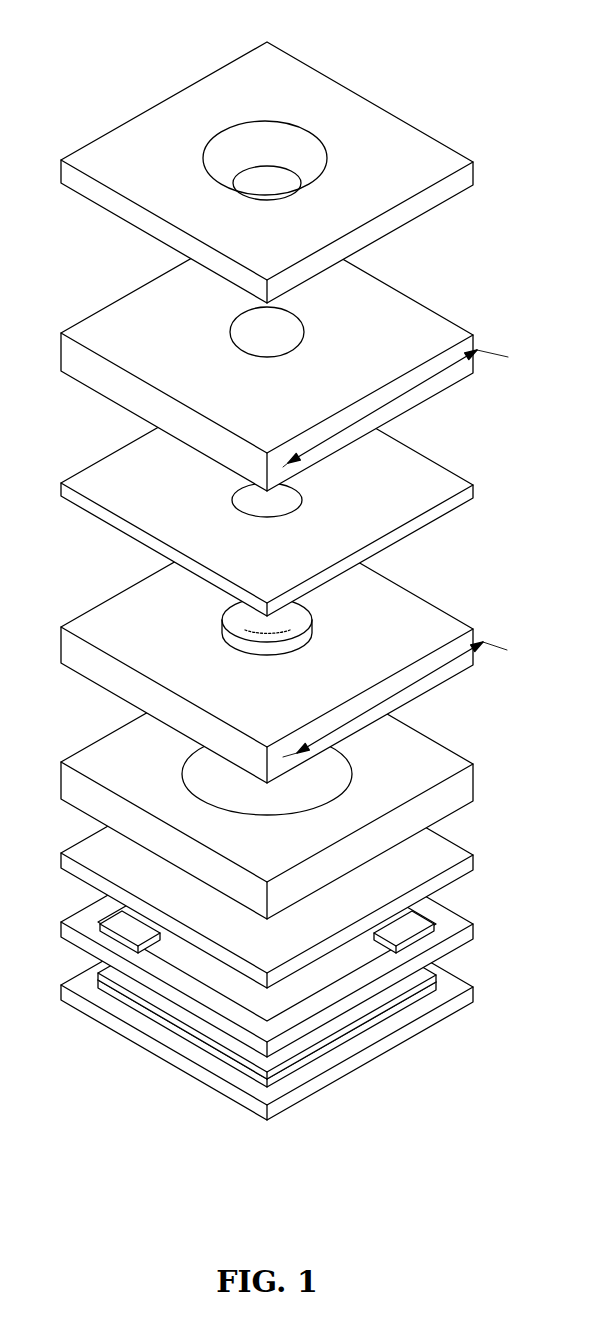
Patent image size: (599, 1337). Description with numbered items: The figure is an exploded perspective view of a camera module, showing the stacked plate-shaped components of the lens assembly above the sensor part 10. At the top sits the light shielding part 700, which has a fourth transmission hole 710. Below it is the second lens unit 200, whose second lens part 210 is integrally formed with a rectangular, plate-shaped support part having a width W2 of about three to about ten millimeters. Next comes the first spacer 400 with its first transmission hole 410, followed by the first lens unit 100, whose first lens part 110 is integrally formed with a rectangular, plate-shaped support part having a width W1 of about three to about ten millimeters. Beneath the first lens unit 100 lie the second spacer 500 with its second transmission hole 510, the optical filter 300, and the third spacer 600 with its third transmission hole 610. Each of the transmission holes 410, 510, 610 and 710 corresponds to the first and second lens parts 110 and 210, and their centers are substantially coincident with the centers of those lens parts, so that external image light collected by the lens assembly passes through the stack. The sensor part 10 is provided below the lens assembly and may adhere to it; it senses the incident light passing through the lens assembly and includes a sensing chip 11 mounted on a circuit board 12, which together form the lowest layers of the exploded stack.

The sensor part 10 is at (267, 997).
The sensing chip 11 is at (375, 1010).
The circuit board 12 is at (353, 1053).
The first lens unit 100 is at (447, 627).
The first lens part 110 is at (290, 603).
The second lens unit 200 is at (438, 348).
The second lens part 210 is at (287, 327).
The optical filter 300 is at (452, 845).
The first spacer 400 is at (450, 487).
The first transmission hole 410 is at (283, 504).
The second spacer 500 is at (462, 788).
The second transmission hole 510 is at (305, 797).
The third spacer 600 is at (450, 925).
The third transmission hole 610 is at (398, 933).
The light shielding part 700 is at (137, 132).
The fourth transmission hole 710 is at (255, 150).
The width of the first support part W1 is at (395, 699).
The width of the second support part W2 is at (395, 408).